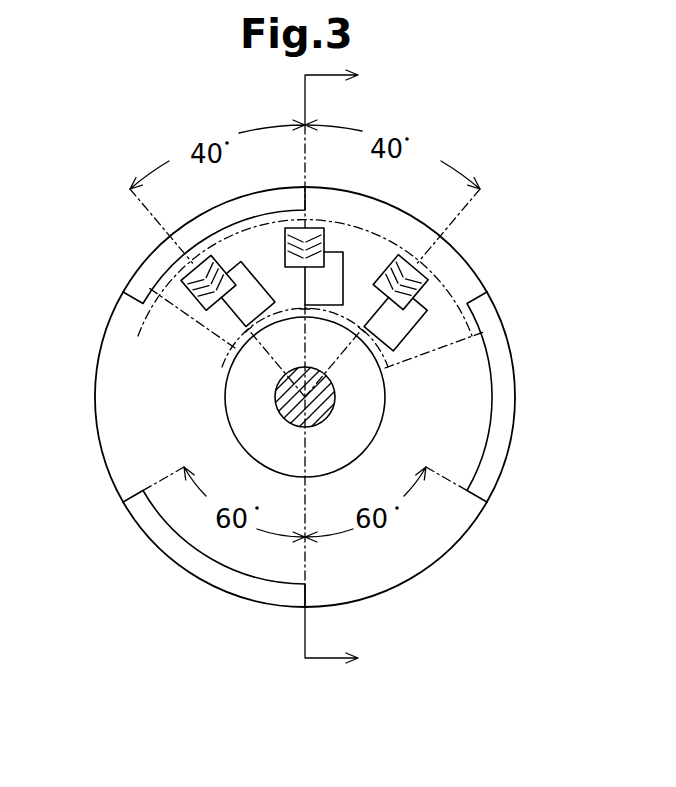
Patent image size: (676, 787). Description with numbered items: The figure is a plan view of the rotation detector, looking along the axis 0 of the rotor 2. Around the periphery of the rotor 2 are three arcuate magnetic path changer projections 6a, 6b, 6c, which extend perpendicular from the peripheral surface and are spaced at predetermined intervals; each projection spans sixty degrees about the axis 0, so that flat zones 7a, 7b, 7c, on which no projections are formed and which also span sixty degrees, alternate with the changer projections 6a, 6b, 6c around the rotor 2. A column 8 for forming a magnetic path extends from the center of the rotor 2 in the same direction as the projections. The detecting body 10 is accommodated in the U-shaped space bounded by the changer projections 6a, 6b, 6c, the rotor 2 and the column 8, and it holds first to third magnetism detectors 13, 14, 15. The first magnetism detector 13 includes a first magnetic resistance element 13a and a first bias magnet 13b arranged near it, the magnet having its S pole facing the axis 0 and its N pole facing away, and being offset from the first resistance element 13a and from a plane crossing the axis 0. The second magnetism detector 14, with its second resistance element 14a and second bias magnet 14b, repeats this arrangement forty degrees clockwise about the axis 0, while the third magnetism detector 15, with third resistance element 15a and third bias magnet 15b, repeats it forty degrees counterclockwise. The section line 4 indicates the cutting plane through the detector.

The rotor 2 is at (309, 386).
The section line 4 is at (344, 368).
The magnetic path changer projection 6a is at (240, 205).
The magnetic path changer projection 6b is at (510, 347).
The magnetic path changer projection 6c is at (174, 558).
The flat zone 7a is at (404, 217).
The flat zone 7b is at (434, 558).
The flat zone 7c is at (110, 330).
The column 8 is at (362, 445).
The axis 0 is at (316, 406).
The detecting body 10 is at (428, 369).
The first magnetism detector 13 is at (350, 218).
The first magnetic resistance element 13a is at (318, 226).
The first bias magnet 13b is at (338, 252).
The second magnetism detector 14 is at (468, 286).
The second resistance element 14a is at (424, 268).
The second bias magnet 14b is at (440, 282).
The third magnetism detector 15 is at (196, 323).
The third resistance element 15a is at (205, 311).
The third bias magnet 15b is at (230, 340).